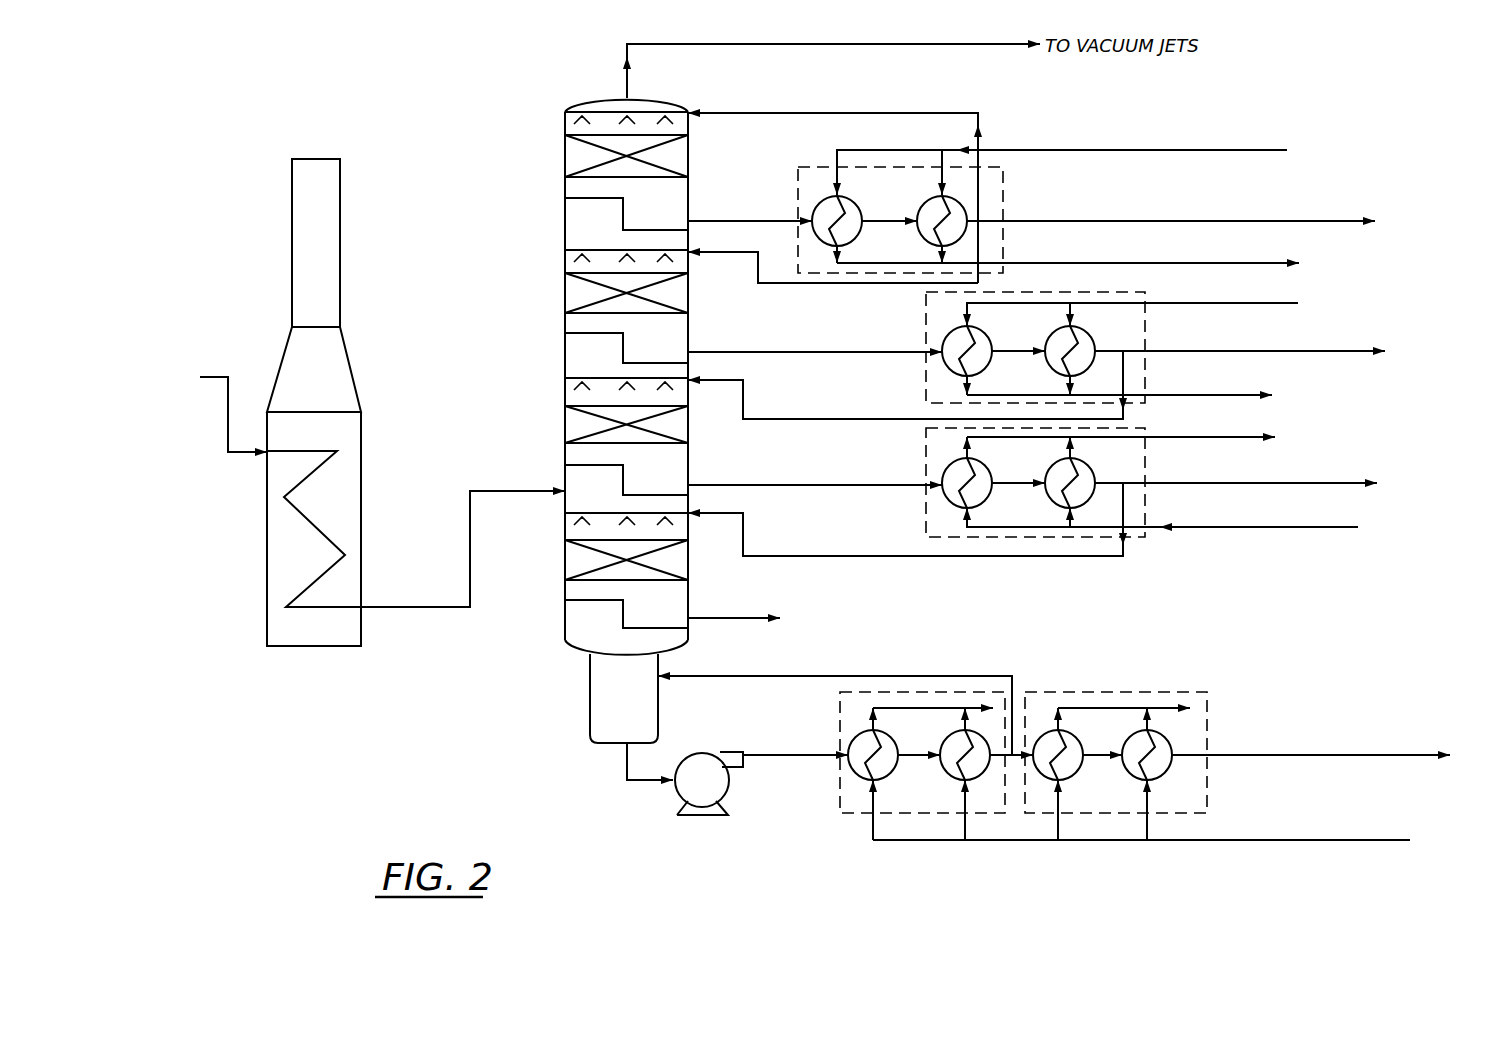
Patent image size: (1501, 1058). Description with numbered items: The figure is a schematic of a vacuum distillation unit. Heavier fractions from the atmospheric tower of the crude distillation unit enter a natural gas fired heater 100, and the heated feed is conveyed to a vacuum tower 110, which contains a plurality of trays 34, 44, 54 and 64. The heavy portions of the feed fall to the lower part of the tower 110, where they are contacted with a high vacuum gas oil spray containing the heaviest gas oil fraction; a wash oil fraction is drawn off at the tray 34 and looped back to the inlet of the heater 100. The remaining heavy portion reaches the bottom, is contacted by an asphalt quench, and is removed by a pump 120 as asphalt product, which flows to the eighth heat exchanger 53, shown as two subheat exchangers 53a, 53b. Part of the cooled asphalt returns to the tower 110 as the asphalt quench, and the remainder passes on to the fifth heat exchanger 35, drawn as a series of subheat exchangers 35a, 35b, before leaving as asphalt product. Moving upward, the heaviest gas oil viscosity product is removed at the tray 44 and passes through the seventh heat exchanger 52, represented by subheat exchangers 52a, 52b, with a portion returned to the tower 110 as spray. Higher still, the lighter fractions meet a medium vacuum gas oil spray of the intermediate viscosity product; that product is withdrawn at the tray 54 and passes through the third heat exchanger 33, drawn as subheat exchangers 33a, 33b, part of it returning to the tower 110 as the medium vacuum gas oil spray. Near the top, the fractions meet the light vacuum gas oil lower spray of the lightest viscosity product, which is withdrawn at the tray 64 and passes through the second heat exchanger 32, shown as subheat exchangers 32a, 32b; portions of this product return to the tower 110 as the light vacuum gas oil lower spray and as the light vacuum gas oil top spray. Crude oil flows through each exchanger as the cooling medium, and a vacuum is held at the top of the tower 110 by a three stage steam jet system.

The natural gas fired heater 100 is at (340, 221).
The vacuum tower 110 is at (565, 641).
The pump 120 is at (698, 760).
The tray 34 is at (754, 615).
The tray 44 is at (626, 480).
The tray 54 is at (626, 348).
The tray 64 is at (626, 214).
The second heat exchanger 32 is at (1031, 199).
The subheat exchanger 32a is at (857, 208).
The subheat exchanger 32b is at (920, 237).
The third heat exchanger 33 is at (1036, 368).
The subheat exchanger 33a is at (988, 334).
The subheat exchanger 33b is at (1050, 368).
The seventh heat exchanger 52 is at (1056, 503).
The subheat exchanger 52a is at (988, 466).
The subheat exchanger 52b is at (1050, 500).
The eighth heat exchanger 53 is at (1068, 749).
The subheat exchanger 53a is at (885, 741).
The subheat exchanger 53b is at (957, 778).
The fifth heat exchanger 35 is at (1237, 754).
The subheat exchanger 35a is at (1070, 741).
The subheat exchanger 35b is at (1140, 778).